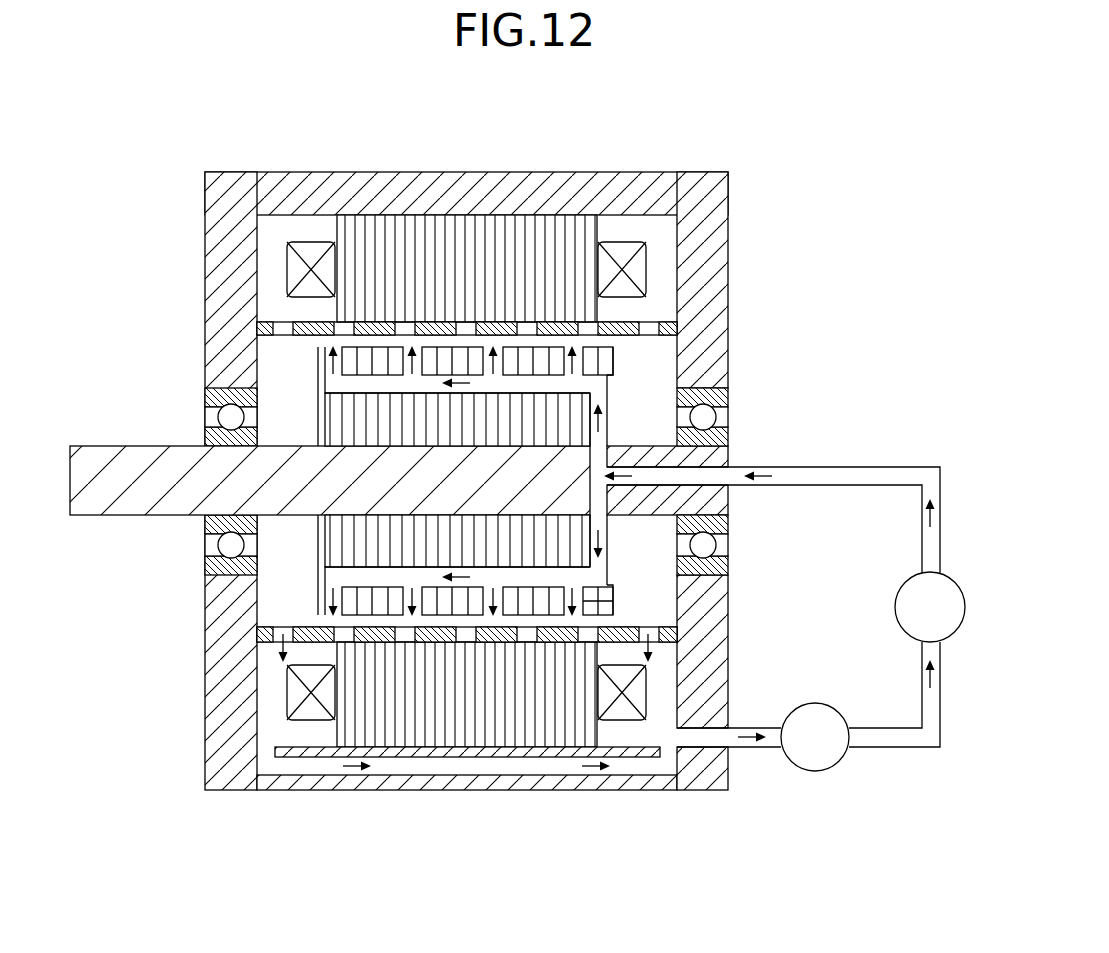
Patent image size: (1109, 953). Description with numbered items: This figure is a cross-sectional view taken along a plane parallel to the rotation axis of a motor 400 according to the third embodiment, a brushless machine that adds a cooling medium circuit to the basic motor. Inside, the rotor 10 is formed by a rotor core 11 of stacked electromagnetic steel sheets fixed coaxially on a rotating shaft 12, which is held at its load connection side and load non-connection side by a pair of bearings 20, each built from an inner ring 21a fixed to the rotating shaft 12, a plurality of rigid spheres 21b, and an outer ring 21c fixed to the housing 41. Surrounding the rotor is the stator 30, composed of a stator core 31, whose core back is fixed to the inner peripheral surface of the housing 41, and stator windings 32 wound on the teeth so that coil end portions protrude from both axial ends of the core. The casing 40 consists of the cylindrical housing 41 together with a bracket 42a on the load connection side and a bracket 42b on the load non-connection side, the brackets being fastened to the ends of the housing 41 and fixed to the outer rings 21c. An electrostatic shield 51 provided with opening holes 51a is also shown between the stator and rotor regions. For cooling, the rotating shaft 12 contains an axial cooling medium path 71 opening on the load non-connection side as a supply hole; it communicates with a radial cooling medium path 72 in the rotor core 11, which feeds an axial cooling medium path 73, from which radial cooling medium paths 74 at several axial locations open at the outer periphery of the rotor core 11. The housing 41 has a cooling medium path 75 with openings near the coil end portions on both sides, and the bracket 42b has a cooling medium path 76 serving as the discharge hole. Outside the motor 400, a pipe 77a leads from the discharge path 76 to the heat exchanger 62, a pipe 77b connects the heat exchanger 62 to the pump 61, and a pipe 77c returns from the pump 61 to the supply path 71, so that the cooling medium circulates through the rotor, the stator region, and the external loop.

The motor 400 is at (484, 139).
The rotor 10 is at (341, 476).
The rotor core 11 is at (323, 390).
The rotating shaft 12 is at (173, 462).
The bearings 20 is at (465, 481).
The inner ring 21a is at (227, 545).
The rigid spheres 21b is at (207, 555).
The outer ring 21c is at (207, 572).
The stator 30 is at (367, 429).
The stator core 31 is at (343, 235).
The stator windings 32 is at (295, 270).
The casing 40 is at (466, 545).
The housing 41 is at (467, 790).
The bracket 42a is at (237, 790).
The bracket 42b is at (667, 524).
The electrostatic shield 51 is at (273, 642).
The opening holes 51a is at (280, 653).
The pump 61 is at (950, 593).
The heat exchanger 62 is at (837, 755).
The cooling medium path 71 is at (693, 480).
The cooling medium path 72 is at (600, 522).
The cooling medium path 73 is at (493, 577).
The cooling medium paths 74 is at (588, 600).
The cooling medium path 75 is at (632, 767).
The cooling medium path 76 is at (700, 732).
The pipe 77a is at (772, 745).
The pipe 77b is at (933, 713).
The pipe 77c is at (933, 535).